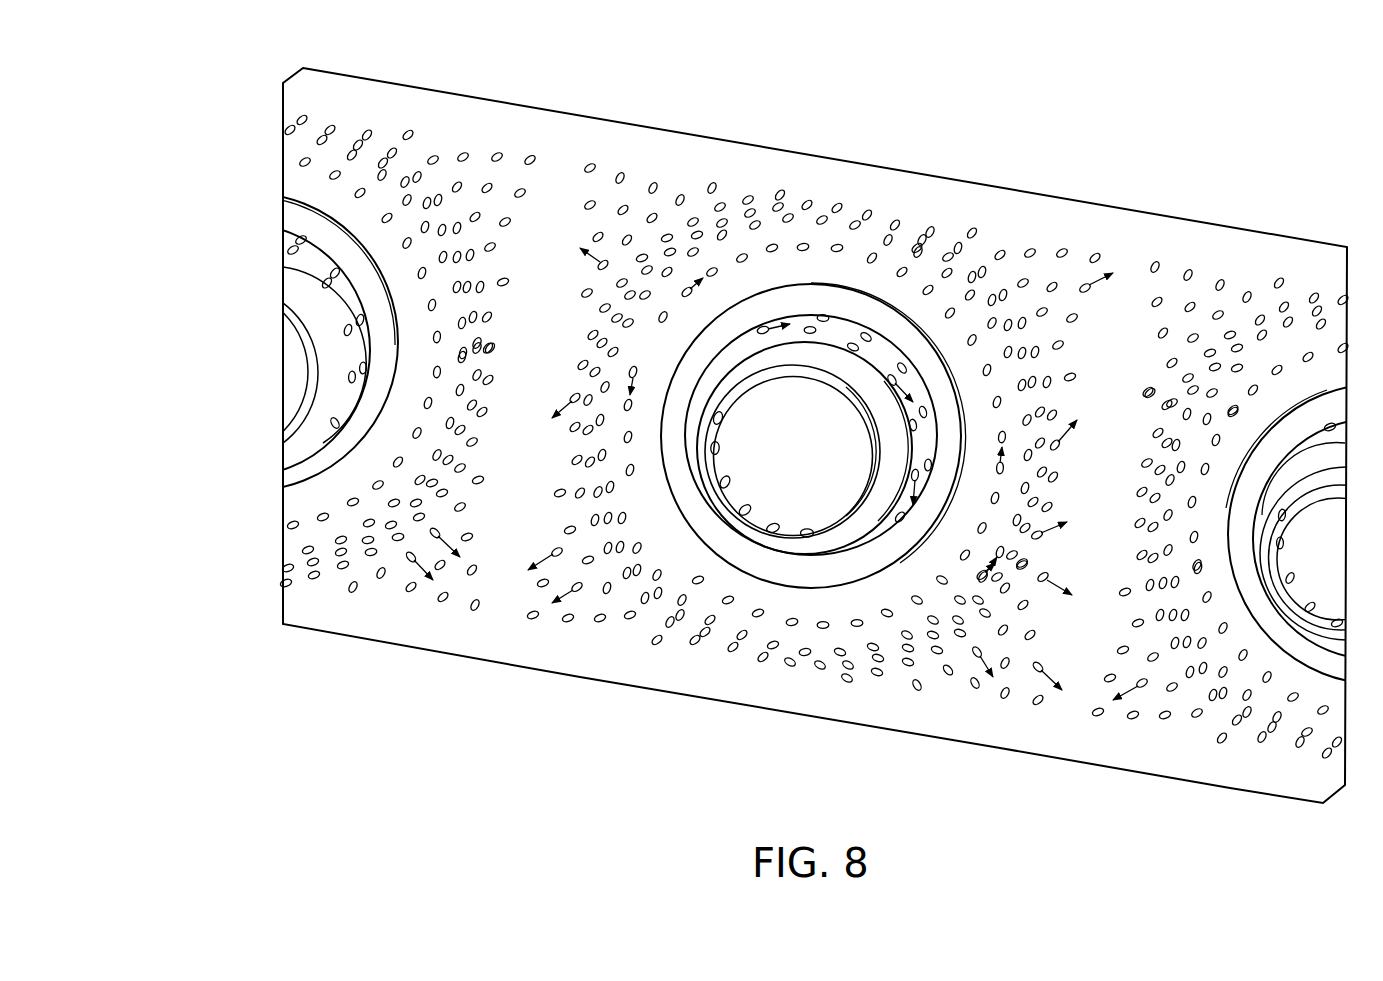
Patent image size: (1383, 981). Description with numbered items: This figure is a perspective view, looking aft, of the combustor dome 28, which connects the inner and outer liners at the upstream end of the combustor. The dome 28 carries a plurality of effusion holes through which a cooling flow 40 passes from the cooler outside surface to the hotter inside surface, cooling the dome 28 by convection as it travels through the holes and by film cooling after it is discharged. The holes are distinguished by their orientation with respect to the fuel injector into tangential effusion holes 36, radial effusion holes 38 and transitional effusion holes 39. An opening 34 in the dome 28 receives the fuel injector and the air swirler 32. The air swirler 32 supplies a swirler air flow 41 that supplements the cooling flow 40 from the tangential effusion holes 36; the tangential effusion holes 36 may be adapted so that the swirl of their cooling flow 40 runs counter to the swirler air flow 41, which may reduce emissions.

The dome 28 is at (240, 87).
The air swirler 32 is at (847, 327).
The opening 34 is at (798, 467).
The tangential effusion hole 36 is at (928, 290).
The radial effusion hole 38 is at (530, 160).
The transitional effusion hole 39 is at (720, 207).
The cooling flow 40 is at (628, 372).
The swirler air flow 41 is at (915, 403).